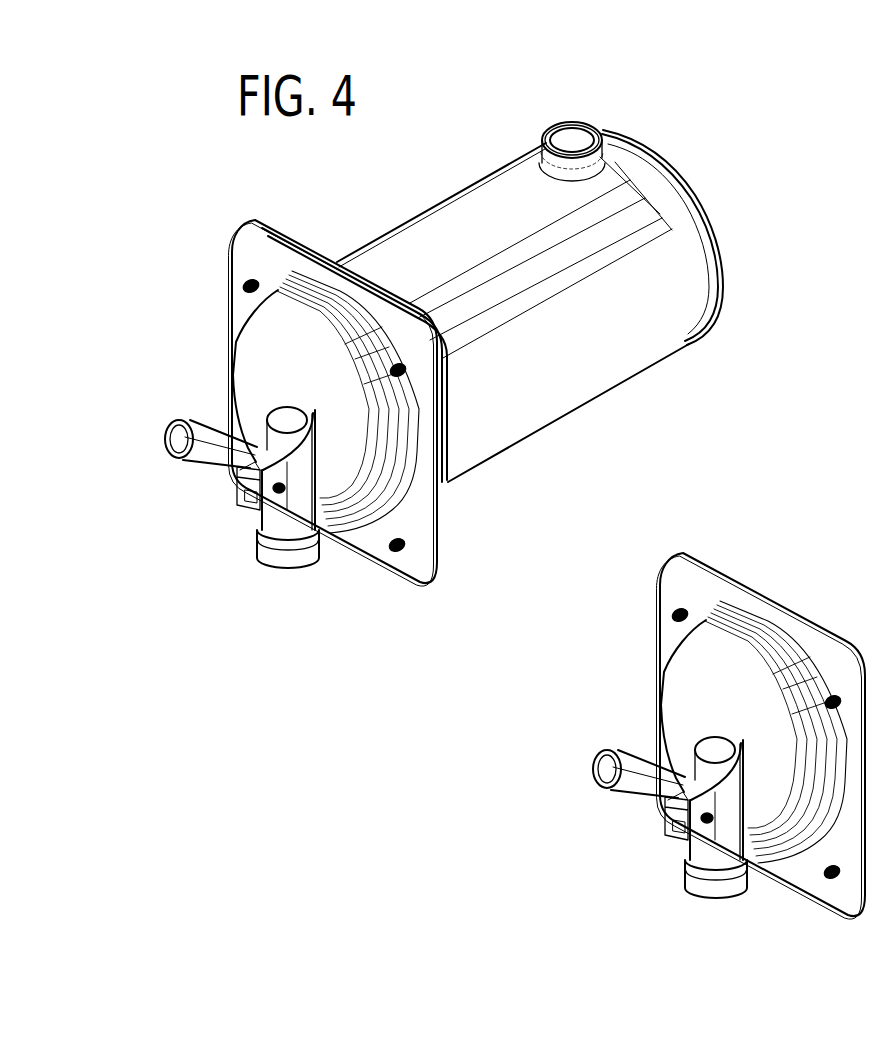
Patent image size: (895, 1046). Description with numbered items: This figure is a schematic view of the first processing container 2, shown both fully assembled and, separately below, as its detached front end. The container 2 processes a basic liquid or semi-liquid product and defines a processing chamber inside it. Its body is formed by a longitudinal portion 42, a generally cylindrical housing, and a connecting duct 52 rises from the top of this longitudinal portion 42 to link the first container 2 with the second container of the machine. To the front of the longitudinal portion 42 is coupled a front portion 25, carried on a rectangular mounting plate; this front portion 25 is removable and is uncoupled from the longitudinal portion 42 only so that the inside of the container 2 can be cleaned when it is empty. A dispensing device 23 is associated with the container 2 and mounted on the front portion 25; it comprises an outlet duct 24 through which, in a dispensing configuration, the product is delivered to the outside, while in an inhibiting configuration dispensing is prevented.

The first processing container 2 is at (517, 334).
The longitudinal portion 42 is at (570, 282).
The connecting duct 52 is at (590, 112).
The front portion 25 is at (222, 380).
The dispensing device 23 is at (255, 528).
The outlet duct 24 is at (302, 570).